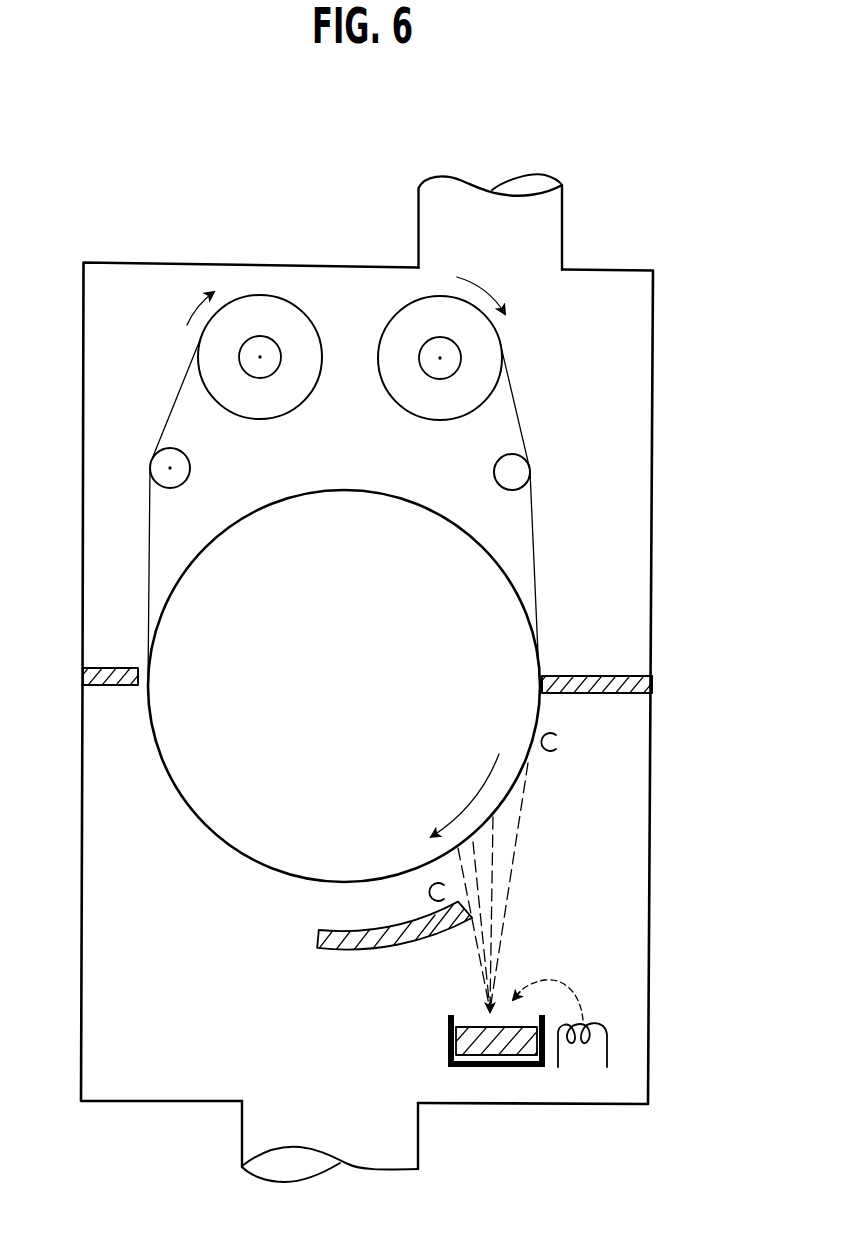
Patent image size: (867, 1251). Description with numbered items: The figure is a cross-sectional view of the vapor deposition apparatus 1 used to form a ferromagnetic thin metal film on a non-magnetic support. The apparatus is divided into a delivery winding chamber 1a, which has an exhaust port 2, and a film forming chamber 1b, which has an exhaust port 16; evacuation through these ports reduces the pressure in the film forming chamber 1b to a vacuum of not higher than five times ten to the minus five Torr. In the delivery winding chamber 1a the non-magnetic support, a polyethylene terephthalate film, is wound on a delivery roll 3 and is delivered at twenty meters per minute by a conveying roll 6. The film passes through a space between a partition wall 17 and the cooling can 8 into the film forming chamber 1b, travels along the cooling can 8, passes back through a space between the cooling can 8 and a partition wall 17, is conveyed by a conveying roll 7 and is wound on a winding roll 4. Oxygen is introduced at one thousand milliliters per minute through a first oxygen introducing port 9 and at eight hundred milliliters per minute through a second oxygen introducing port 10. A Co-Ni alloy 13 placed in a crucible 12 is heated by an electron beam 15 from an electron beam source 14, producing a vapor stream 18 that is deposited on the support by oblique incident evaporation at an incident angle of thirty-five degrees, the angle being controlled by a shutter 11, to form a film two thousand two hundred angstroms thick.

The vapor deposition apparatus 1 is at (518, 129).
The delivery winding chamber 1a is at (638, 351).
The film forming chamber 1b is at (651, 940).
The exhaust port 2 is at (545, 216).
The delivery roll 3 is at (487, 348).
The winding roll 4 is at (307, 347).
The conveying roll 6 is at (506, 466).
The conveying roll 7 is at (182, 470).
The cooling can 8 is at (325, 591).
The first oxygen introducing port 9 is at (560, 741).
The second oxygen introducing port 10 is at (426, 897).
The shutter 11 is at (357, 943).
The crucible 12 is at (447, 1033).
The Co-Ni alloy 13 is at (466, 1026).
The electron beam source 14 is at (609, 1032).
The electron beam 15 is at (565, 983).
The exhaust port 16 is at (410, 1137).
The partition wall 17 is at (110, 666).
The vapor stream 18 is at (514, 888).